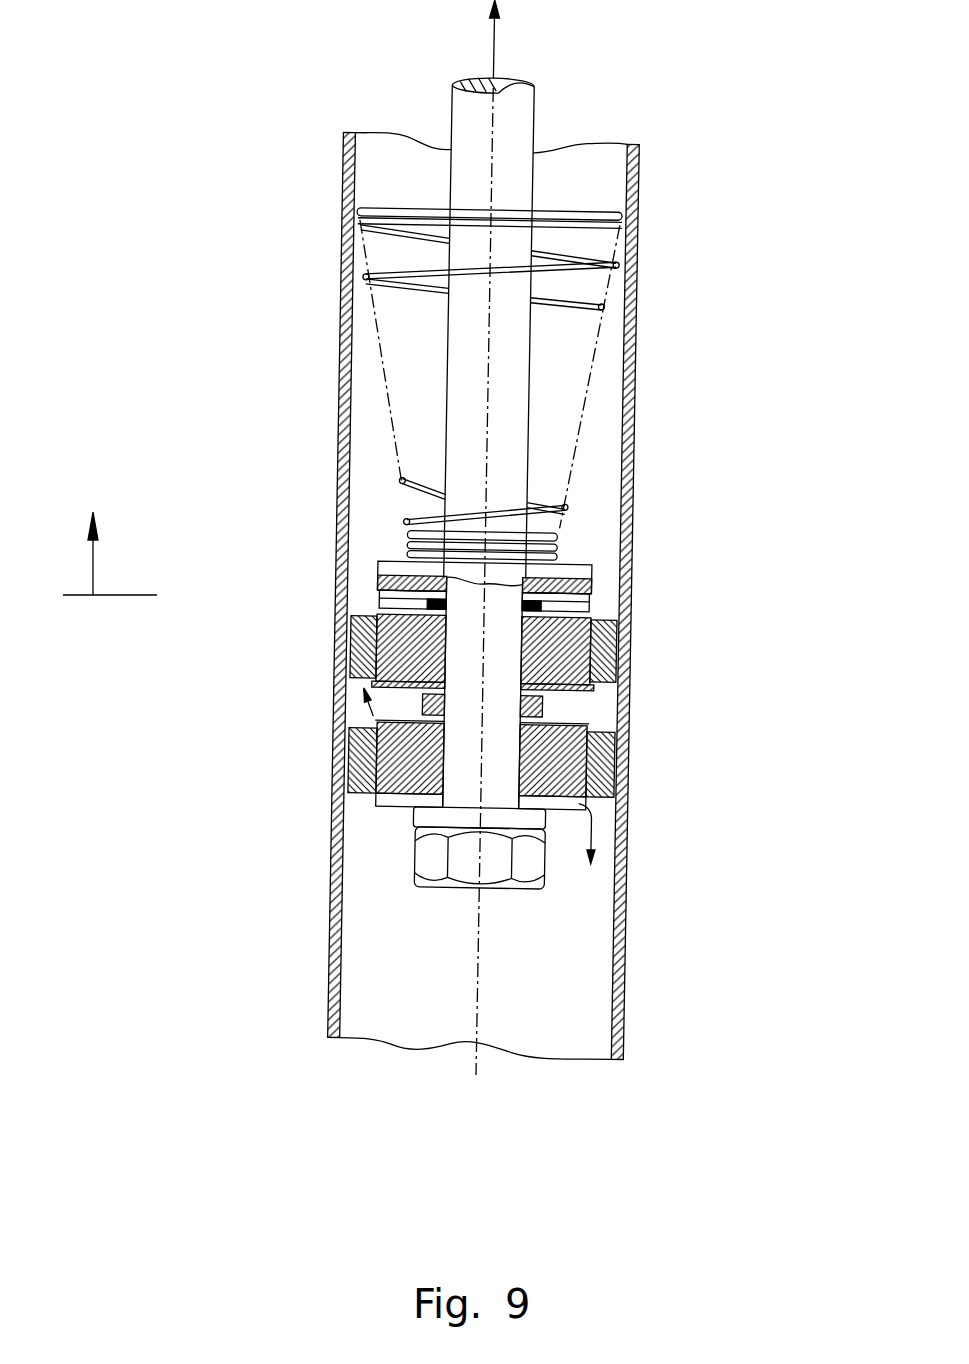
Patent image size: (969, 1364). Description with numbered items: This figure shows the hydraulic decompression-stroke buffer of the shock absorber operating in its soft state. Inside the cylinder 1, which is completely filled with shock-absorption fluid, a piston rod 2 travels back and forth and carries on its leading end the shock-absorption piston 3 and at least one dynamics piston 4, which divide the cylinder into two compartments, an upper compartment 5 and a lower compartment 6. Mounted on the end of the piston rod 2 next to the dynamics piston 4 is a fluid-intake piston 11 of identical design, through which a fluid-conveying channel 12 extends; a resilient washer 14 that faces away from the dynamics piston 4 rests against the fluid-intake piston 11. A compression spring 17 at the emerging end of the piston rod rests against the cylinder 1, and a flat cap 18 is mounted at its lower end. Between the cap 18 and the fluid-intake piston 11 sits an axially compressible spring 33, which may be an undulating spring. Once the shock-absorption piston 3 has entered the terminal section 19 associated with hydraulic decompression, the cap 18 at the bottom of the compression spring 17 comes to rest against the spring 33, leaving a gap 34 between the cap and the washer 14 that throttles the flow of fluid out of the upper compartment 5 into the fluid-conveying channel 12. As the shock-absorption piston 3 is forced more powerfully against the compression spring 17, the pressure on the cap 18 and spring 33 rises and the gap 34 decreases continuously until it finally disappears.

The cylinder 1 is at (632, 445).
The piston rod 2 is at (512, 473).
The shock-absorption piston 3 is at (300, 706).
The dynamics piston 4 is at (612, 770).
The upper compartment 5 is at (487, 369).
The compartment 6 is at (528, 1001).
The fluid-intake piston 11 is at (567, 603).
The fluid-conveying channel 12 is at (605, 693).
The resilient washer 14 is at (358, 582).
The compression spring 17 is at (547, 488).
The cap 18 is at (578, 556).
The terminal section 19 is at (110, 524).
The axially compressible spring 33 is at (377, 563).
The gap 34 is at (600, 600).